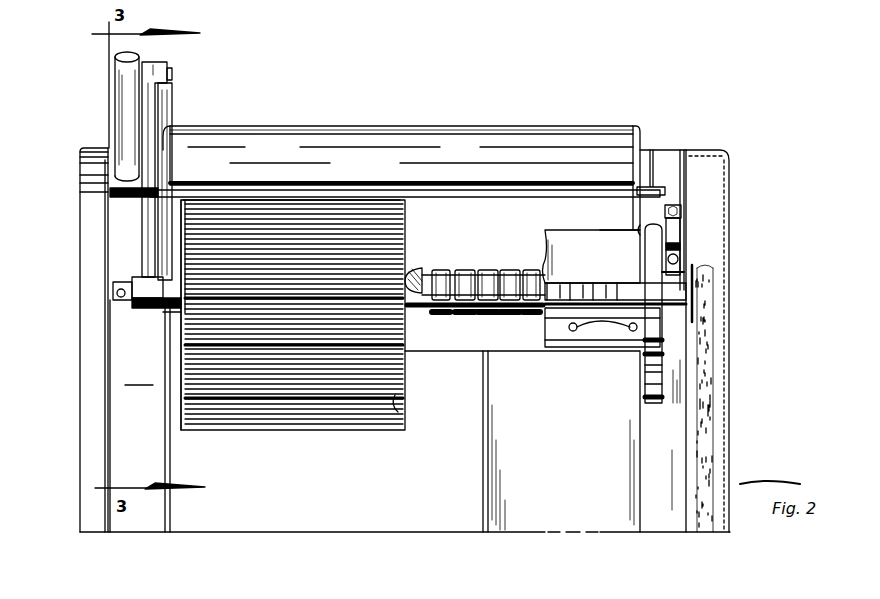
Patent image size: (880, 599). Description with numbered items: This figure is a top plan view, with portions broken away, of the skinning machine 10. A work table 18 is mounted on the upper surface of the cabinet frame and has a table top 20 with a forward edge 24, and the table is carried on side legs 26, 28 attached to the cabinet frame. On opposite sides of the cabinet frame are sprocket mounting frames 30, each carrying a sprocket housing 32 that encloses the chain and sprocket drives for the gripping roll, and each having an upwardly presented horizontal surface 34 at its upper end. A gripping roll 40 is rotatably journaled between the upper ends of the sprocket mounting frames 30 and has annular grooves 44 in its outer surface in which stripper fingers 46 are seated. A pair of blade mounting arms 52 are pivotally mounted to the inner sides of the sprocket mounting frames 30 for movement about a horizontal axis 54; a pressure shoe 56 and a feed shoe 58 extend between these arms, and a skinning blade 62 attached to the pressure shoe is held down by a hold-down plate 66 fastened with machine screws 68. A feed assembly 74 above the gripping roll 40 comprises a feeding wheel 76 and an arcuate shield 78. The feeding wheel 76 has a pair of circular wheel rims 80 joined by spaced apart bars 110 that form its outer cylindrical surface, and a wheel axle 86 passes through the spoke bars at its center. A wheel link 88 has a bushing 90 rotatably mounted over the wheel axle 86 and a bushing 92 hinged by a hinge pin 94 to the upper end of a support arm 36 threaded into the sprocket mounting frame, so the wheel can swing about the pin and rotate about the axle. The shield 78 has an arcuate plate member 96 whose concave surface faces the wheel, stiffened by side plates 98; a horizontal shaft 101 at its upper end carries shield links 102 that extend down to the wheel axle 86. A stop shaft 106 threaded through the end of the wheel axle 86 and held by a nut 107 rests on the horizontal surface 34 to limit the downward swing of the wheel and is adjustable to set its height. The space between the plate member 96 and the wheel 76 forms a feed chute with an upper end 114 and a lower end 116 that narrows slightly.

The skinning machine 10 is at (653, 163).
The work table 18 is at (540, 532).
The table top 20 is at (568, 514).
The forward edge 24 is at (503, 352).
The side leg 26 is at (166, 520).
The side leg 28 is at (640, 533).
The sprocket mounting frame 30 is at (110, 163).
The sprocket housing 32 is at (108, 184).
The horizontal surface 34 is at (133, 258).
The support arm 36 is at (115, 79).
The gripping roll 40 is at (441, 328).
The annular grooves 44 is at (523, 317).
The stripper fingers 46 is at (527, 268).
The blade mounting arm 52 is at (655, 270).
The horizontal axis 54 is at (682, 233).
The pressure shoe 56 is at (570, 340).
The feed shoe 58 is at (592, 256).
The skinning blade 62 is at (575, 325).
The hold-down plate 66 is at (590, 325).
The machine screws 68 is at (600, 325).
The feed assembly 74 is at (176, 100).
The feeding wheel 76 is at (288, 430).
The arcuate shield 78 is at (372, 124).
The wheel rims 80 is at (181, 432).
The wheel axle 86 is at (116, 300).
The wheel link 88 is at (110, 200).
The bushing 90 is at (128, 307).
The bushing 92 is at (160, 63).
The hinge pin 94 is at (172, 74).
The arcuate plate member 96 is at (288, 128).
The side plates 98 is at (168, 130).
The horizontal shaft 101 is at (143, 192).
The shield links 102 is at (160, 215).
The stop shaft 106 is at (128, 277).
The nut 107 is at (113, 285).
The spaced apart bars 110 is at (398, 410).
The upper end 114 is at (535, 205).
The lower end 116 is at (478, 232).